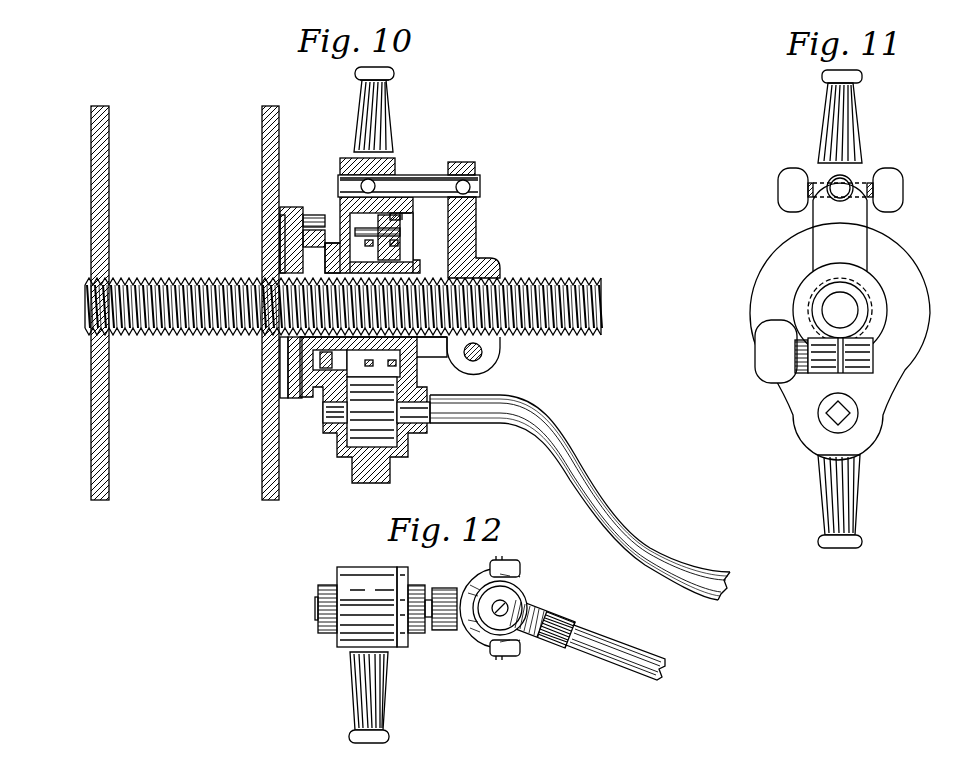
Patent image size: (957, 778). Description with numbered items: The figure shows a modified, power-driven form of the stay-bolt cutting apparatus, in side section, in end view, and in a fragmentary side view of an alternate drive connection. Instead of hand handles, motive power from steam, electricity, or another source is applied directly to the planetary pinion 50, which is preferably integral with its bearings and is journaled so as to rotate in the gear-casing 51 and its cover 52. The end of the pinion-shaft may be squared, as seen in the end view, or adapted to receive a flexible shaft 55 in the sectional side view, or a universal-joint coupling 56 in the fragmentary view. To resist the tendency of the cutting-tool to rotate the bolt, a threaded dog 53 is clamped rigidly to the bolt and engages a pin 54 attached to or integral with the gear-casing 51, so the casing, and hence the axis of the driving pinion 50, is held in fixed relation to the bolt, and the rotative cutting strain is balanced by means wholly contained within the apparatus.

In FIG. 10, the planetary pinion 50 is at (368, 422).
In FIG. 11, the planetary pinion 50 is at (823, 413).
In FIG. 10, the gear-casing 51 is at (343, 212).
In FIG. 12, the gear-casing 51 is at (355, 630).
In FIG. 10, the cover 52 is at (413, 232).
In FIG. 12, the cover 52 is at (400, 647).
In FIG. 10, the threaded dog 53 is at (465, 228).
In FIG. 11, the threaded dog 53 is at (840, 235).
In FIG. 10, the pin 54 is at (423, 176).
In FIG. 11, the pin 54 is at (845, 184).
In FIG. 10, the flexible shaft 55 is at (585, 457).
In FIG. 12, the universal-joint coupling 56 is at (478, 640).